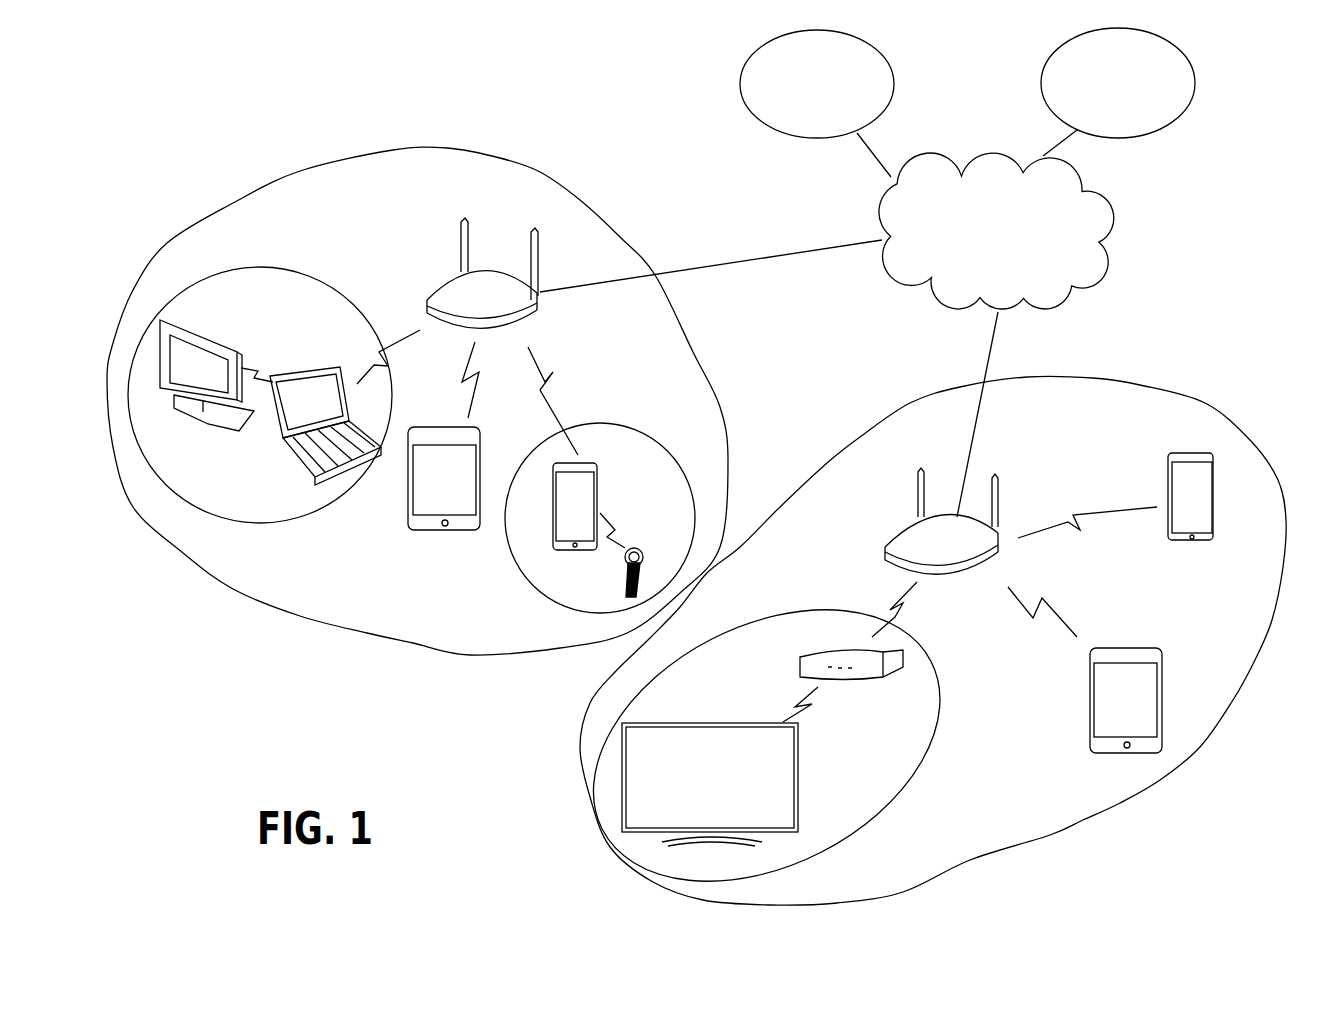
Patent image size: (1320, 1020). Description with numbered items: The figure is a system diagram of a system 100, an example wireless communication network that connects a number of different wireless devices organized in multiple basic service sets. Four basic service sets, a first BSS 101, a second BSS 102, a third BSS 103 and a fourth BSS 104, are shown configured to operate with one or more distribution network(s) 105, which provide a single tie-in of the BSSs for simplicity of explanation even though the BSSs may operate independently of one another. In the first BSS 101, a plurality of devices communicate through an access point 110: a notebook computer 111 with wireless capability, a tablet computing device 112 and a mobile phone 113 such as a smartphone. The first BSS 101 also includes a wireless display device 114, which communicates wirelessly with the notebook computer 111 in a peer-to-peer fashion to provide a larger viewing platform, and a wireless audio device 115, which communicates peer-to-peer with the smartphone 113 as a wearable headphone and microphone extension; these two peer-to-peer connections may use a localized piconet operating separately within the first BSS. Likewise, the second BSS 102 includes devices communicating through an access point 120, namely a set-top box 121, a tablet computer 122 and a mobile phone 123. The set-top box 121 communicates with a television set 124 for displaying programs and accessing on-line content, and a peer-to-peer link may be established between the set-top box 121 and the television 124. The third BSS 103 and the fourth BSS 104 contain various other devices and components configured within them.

The system 100 is at (1192, 206).
The BSS1 101 is at (518, 182).
The BSS2 102 is at (1183, 413).
The BSS3 103 is at (893, 66).
The BSS4 104 is at (1194, 64).
The distribution network(s) 105 is at (1092, 190).
The access point 110 is at (540, 305).
The notebook computer 111 is at (290, 458).
The tablet computing device 112 is at (410, 530).
The mobile phone 113 is at (552, 518).
The wireless display device 114 is at (193, 413).
The wireless audio device 115 is at (640, 576).
The access point 120 is at (1000, 552).
The set-top box 121 is at (898, 652).
The tablet computer 122 is at (1124, 648).
The mobile phone 123 is at (1190, 541).
The television set 124 is at (692, 722).